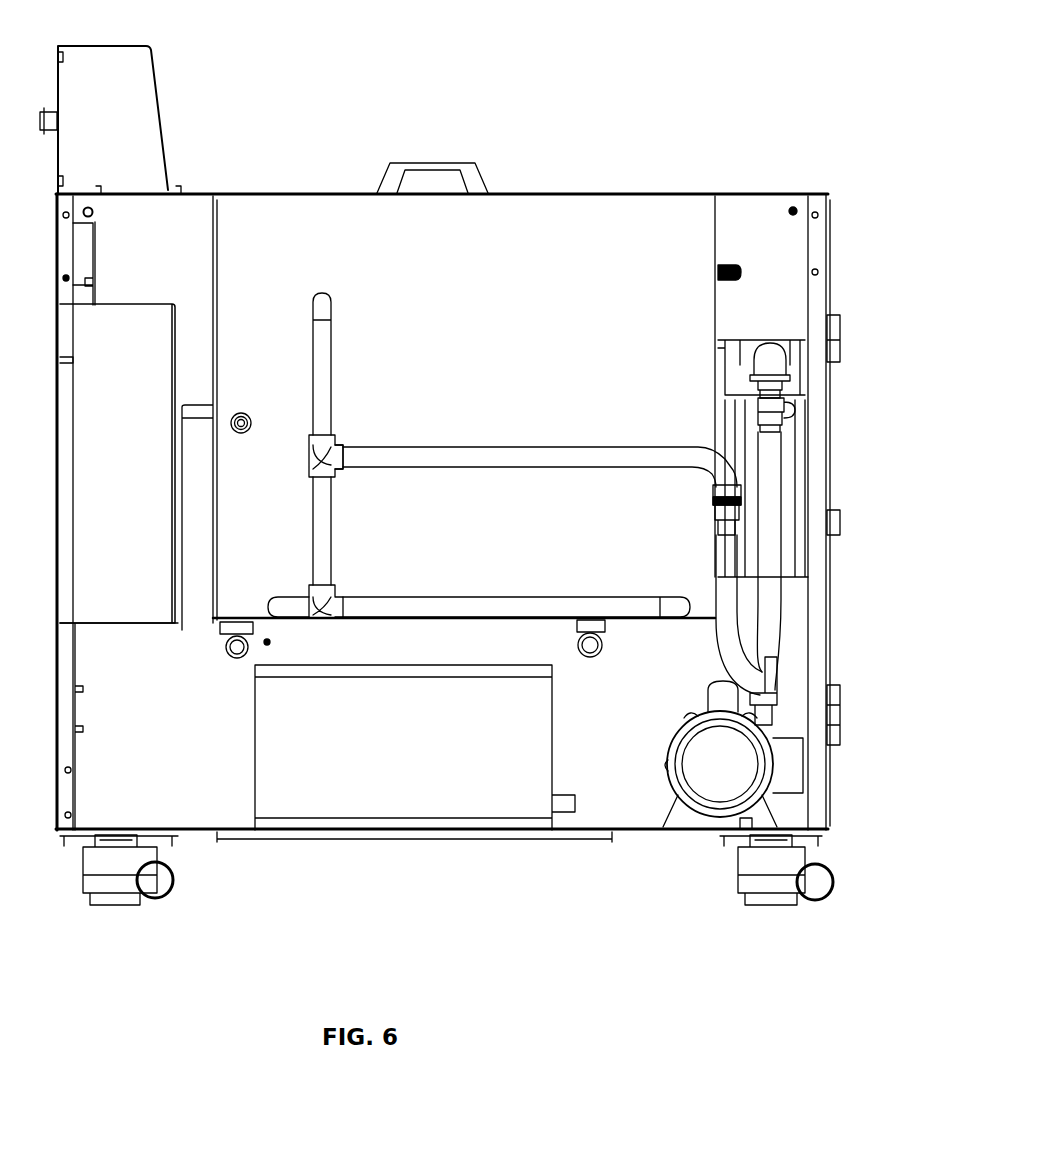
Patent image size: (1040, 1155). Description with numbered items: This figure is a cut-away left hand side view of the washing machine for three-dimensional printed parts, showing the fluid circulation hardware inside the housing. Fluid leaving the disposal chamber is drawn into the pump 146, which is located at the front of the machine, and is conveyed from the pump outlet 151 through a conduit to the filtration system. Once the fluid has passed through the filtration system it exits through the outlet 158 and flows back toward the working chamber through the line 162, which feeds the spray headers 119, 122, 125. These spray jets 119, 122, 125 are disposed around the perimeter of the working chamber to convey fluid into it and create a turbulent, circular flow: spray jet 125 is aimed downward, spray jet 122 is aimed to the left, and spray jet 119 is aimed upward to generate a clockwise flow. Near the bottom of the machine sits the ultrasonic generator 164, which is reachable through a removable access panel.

The spray jet 125 is at (322, 290).
The line 162 is at (526, 455).
The outlet 158 is at (792, 404).
The pump outlet 151 is at (778, 658).
The pump 146 is at (730, 768).
The ultrasonic generator 164 is at (320, 748).
The spray jet 122 is at (290, 622).
The spray jet 119 is at (668, 607).